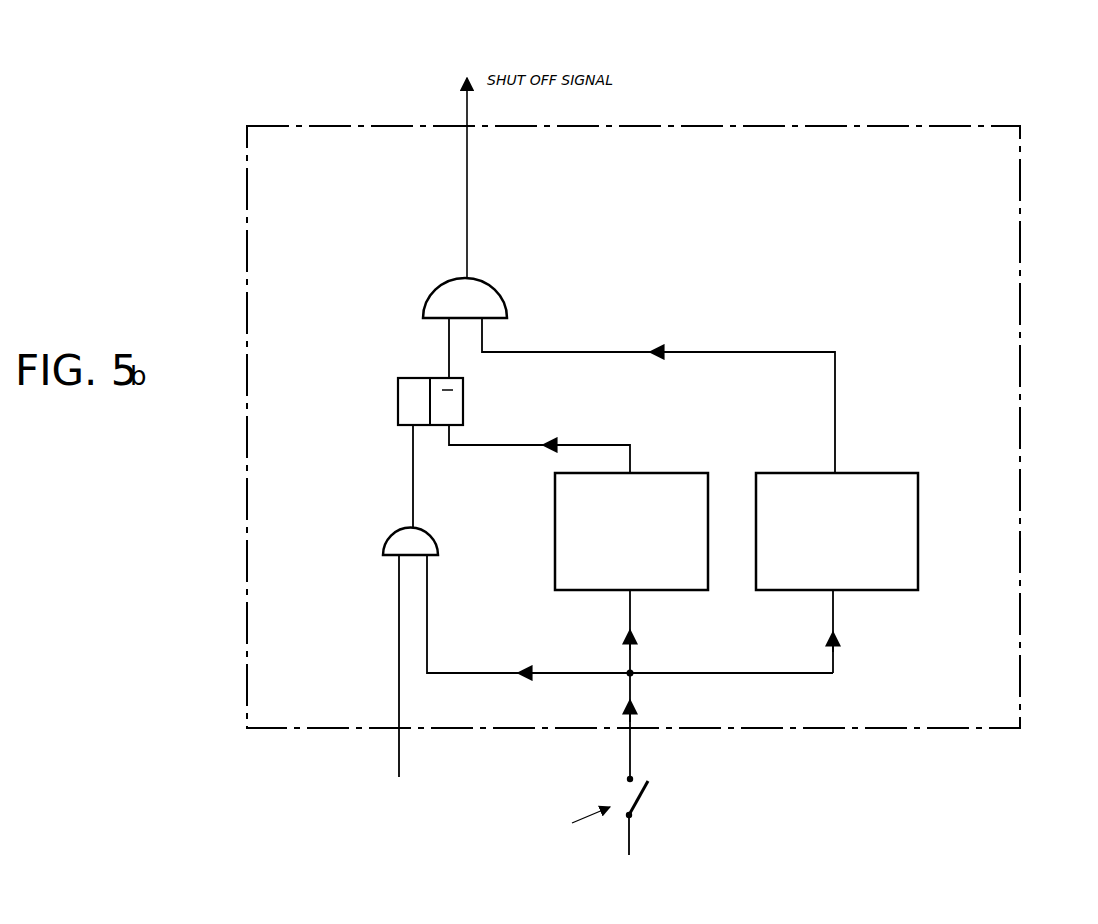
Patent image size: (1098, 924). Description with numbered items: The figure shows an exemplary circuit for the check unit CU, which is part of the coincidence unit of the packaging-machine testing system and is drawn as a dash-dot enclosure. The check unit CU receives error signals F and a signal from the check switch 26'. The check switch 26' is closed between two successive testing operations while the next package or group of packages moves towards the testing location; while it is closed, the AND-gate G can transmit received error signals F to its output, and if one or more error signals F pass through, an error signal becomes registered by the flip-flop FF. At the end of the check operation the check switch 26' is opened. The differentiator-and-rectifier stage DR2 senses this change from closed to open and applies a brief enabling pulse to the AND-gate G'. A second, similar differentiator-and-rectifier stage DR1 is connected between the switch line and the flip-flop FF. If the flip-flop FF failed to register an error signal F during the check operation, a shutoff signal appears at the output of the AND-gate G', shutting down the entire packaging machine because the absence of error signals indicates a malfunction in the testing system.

The check unit CU is at (1022, 318).
The AND-gate G' is at (629, 361).
The flip-flop FF is at (397, 405).
The AND-gate G is at (590, 598).
The error signals F is at (393, 684).
The differentiator-and-rectifier stage DR1 is at (714, 456).
The differentiator-and-rectifier stage DR2 is at (917, 456).
The check switch 26' is at (617, 763).